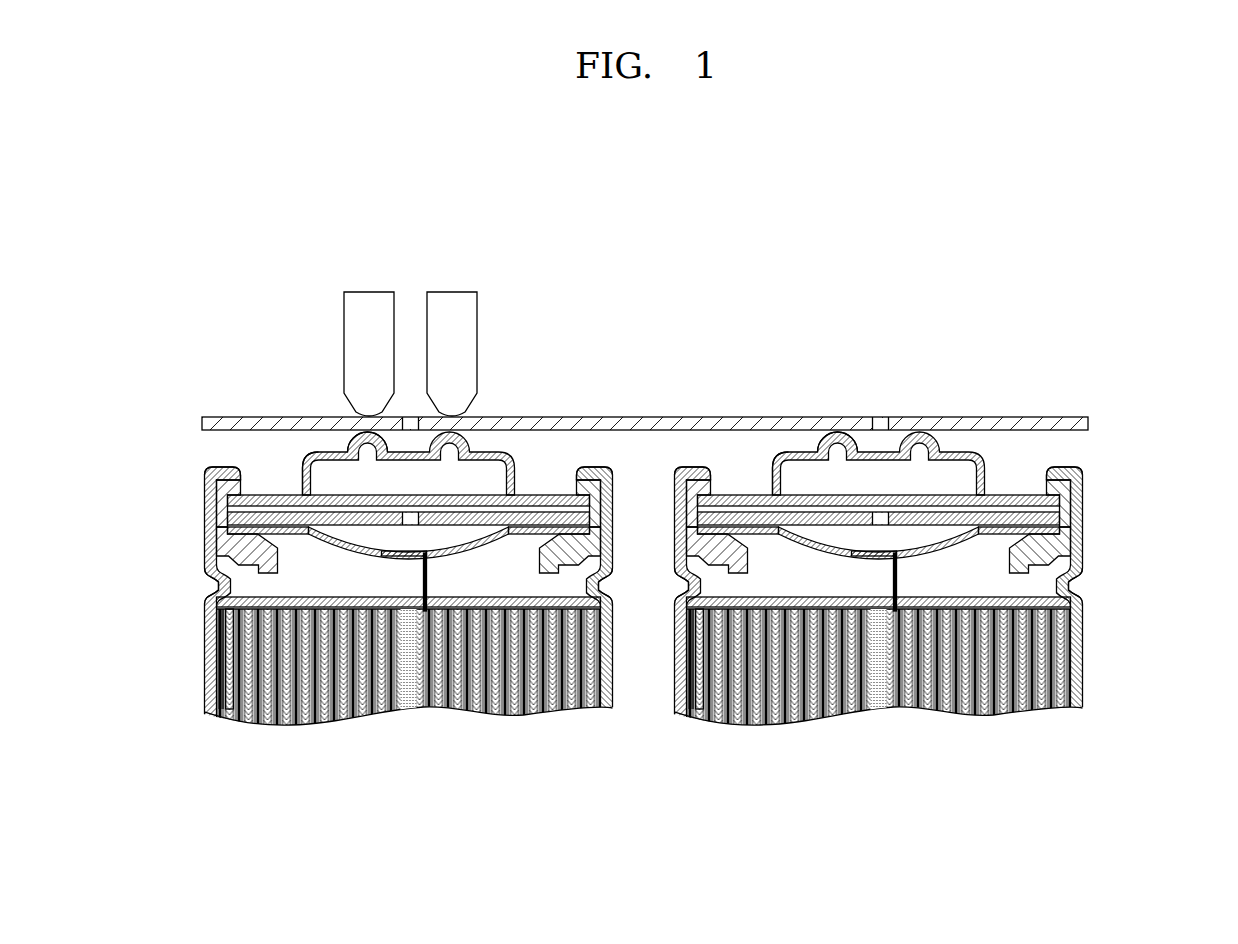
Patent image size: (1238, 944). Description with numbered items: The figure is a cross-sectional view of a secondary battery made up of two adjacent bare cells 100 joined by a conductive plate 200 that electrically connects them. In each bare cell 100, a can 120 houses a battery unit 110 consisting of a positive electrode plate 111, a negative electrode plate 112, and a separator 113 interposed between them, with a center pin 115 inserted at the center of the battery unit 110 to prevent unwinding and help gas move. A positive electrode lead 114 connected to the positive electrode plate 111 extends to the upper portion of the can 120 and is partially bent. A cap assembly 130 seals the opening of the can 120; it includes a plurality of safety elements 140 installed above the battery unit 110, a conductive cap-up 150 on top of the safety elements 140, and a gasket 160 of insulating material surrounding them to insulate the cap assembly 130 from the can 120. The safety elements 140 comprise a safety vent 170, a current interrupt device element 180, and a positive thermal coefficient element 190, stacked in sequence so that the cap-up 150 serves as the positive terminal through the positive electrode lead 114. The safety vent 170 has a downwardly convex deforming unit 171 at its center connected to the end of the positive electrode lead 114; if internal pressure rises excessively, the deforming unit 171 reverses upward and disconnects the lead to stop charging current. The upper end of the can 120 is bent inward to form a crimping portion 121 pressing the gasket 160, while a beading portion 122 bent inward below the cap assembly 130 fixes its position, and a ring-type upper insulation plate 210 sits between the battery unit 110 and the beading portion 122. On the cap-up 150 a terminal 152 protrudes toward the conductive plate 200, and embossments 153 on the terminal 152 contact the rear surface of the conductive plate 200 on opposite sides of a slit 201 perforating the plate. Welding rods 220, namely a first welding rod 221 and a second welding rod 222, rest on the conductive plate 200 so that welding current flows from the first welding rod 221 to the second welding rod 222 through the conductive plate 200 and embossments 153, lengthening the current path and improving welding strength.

The bare cell 100 is at (659, 587).
The battery unit 110 is at (659, 697).
The positive electrode plate 111 is at (228, 630).
The negative electrode plate 112 is at (230, 697).
The separator 113 is at (228, 663).
The positive electrode lead 114 is at (423, 575).
The center pin 115 is at (415, 713).
The can 120 is at (586, 568).
The crimping portion 121 is at (215, 468).
The beading portion 122 is at (206, 575).
The cap assembly 130 is at (711, 468).
The safety elements 140 is at (721, 453).
The cap-up 150 is at (611, 412).
The terminal 152 is at (790, 452).
The embossments 153 is at (838, 441).
The gasket 160 is at (1070, 572).
The safety vent 170 is at (689, 453).
The deforming unit 171 is at (520, 527).
The current interrupt device (CID) element 180 is at (1060, 518).
The positive thermal coefficient (PTC) element 190 is at (1060, 500).
The conductive plate 200 is at (673, 317).
The slit 201 is at (410, 417).
The upper insulation plate 210 is at (570, 700).
The welding rods 220 is at (410, 294).
The first welding rod 221 is at (370, 302).
The second welding rod 222 is at (452, 318).